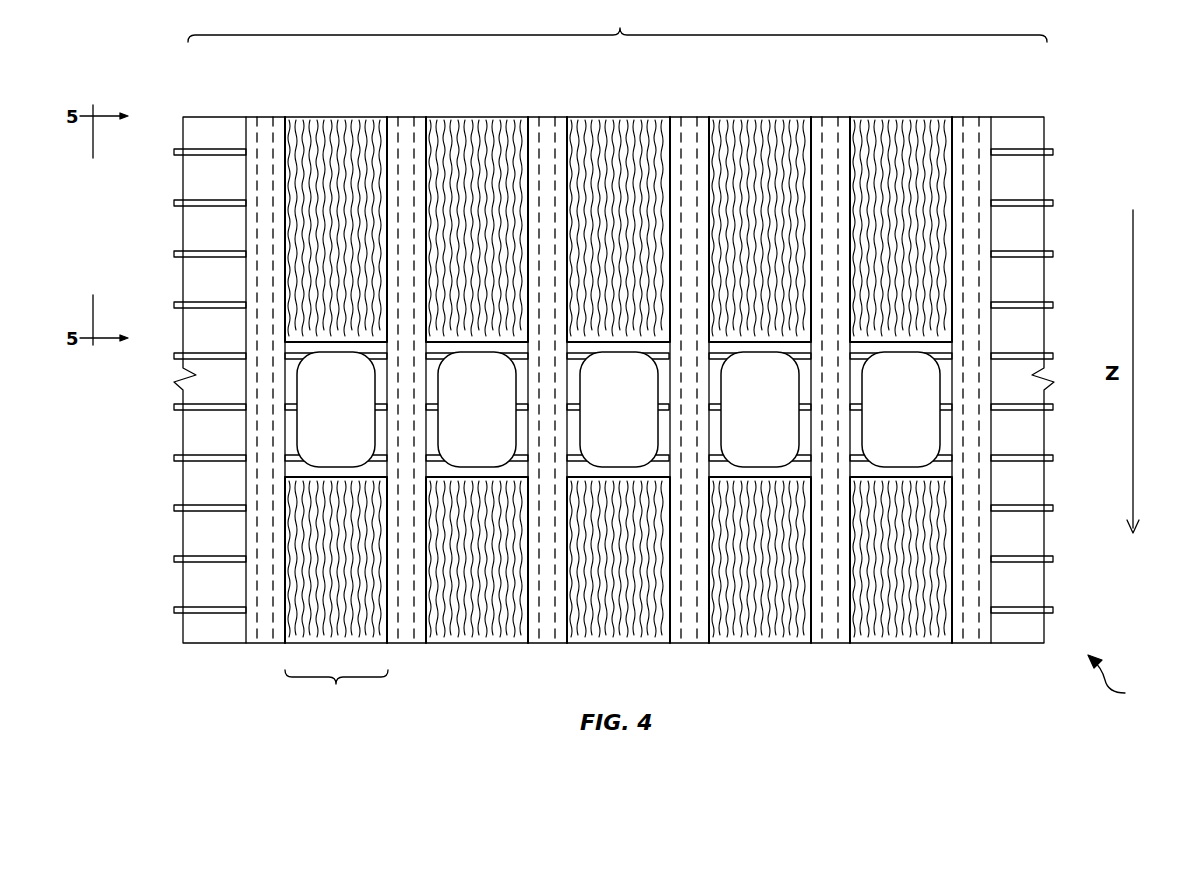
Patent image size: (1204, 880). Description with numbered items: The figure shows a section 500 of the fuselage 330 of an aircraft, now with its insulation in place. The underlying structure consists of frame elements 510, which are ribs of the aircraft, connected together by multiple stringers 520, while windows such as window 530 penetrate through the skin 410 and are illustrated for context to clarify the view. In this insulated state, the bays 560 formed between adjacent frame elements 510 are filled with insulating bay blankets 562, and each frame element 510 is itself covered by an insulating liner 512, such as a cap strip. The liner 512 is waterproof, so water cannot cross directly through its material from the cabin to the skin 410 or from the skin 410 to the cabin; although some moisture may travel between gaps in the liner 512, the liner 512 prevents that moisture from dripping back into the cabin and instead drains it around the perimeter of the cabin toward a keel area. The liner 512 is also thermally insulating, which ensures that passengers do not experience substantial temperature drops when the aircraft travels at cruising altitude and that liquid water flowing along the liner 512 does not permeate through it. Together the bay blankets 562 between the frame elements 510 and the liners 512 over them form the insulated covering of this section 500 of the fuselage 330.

The section of fuselage 500 is at (617, 25).
The frame element 510 is at (268, 140).
The insulating liner 512 is at (277, 130).
The insulating bay blanket 562 is at (348, 130).
The skin 410 is at (1020, 130).
The stringer 520 is at (203, 152).
The window 530 is at (330, 408).
The bay 560 is at (336, 689).
The fuselage 330 is at (1124, 679).